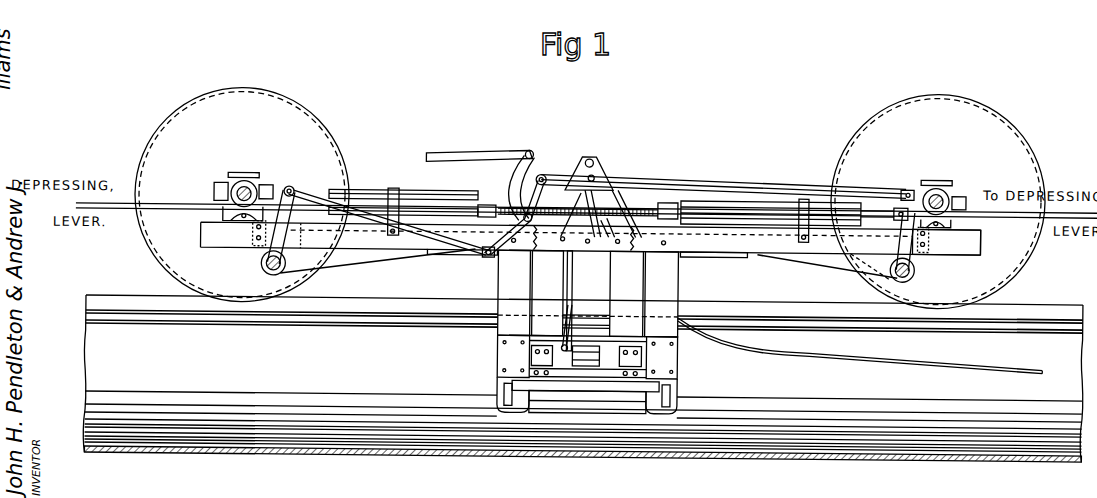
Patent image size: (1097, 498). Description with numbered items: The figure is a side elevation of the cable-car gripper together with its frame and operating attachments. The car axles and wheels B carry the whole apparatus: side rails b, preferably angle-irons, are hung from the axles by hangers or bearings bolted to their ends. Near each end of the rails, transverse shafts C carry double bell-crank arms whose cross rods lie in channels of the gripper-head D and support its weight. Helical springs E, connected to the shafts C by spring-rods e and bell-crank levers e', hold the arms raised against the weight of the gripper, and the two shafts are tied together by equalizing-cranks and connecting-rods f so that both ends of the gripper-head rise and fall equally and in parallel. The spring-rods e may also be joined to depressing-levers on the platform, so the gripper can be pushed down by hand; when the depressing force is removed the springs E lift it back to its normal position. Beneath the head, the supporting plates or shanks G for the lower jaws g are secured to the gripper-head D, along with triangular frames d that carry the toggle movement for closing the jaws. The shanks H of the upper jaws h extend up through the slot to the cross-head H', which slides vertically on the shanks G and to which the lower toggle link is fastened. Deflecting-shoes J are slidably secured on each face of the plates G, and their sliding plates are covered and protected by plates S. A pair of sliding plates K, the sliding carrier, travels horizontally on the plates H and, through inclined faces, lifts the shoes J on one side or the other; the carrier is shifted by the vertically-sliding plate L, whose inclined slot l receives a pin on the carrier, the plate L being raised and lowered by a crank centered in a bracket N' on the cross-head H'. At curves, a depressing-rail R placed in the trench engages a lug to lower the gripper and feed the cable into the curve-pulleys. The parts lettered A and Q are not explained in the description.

The depressing lever rod A is at (586, 210).
The axles and car-wheels B is at (215, 189).
The transverse shafts C is at (266, 270).
The gripper-head D is at (470, 255).
The helical springs E is at (420, 191).
The supporting plates or shanks for the lower jaws G is at (588, 293).
The supporting plates or shanks of the upper jaws H is at (588, 294).
The cross-head H' is at (613, 245).
The deflecting-shoes J is at (497, 388).
The sliding plates (sliding carrier) K is at (498, 369).
The vertically-sliding plate L is at (572, 284).
The bracket N' is at (577, 238).
The block Q is at (587, 359).
The depressing-rails R is at (951, 355).
The protecting plates S is at (587, 357).
The side rails b is at (590, 239).
The triangular frames d is at (602, 194).
The spring-rods e is at (260, 229).
The bell-crank levers e' is at (911, 242).
The connecting-rods f is at (366, 230).
The lower jaws g is at (576, 405).
The upper jaws h is at (678, 372).
The inclined slot l is at (567, 335).